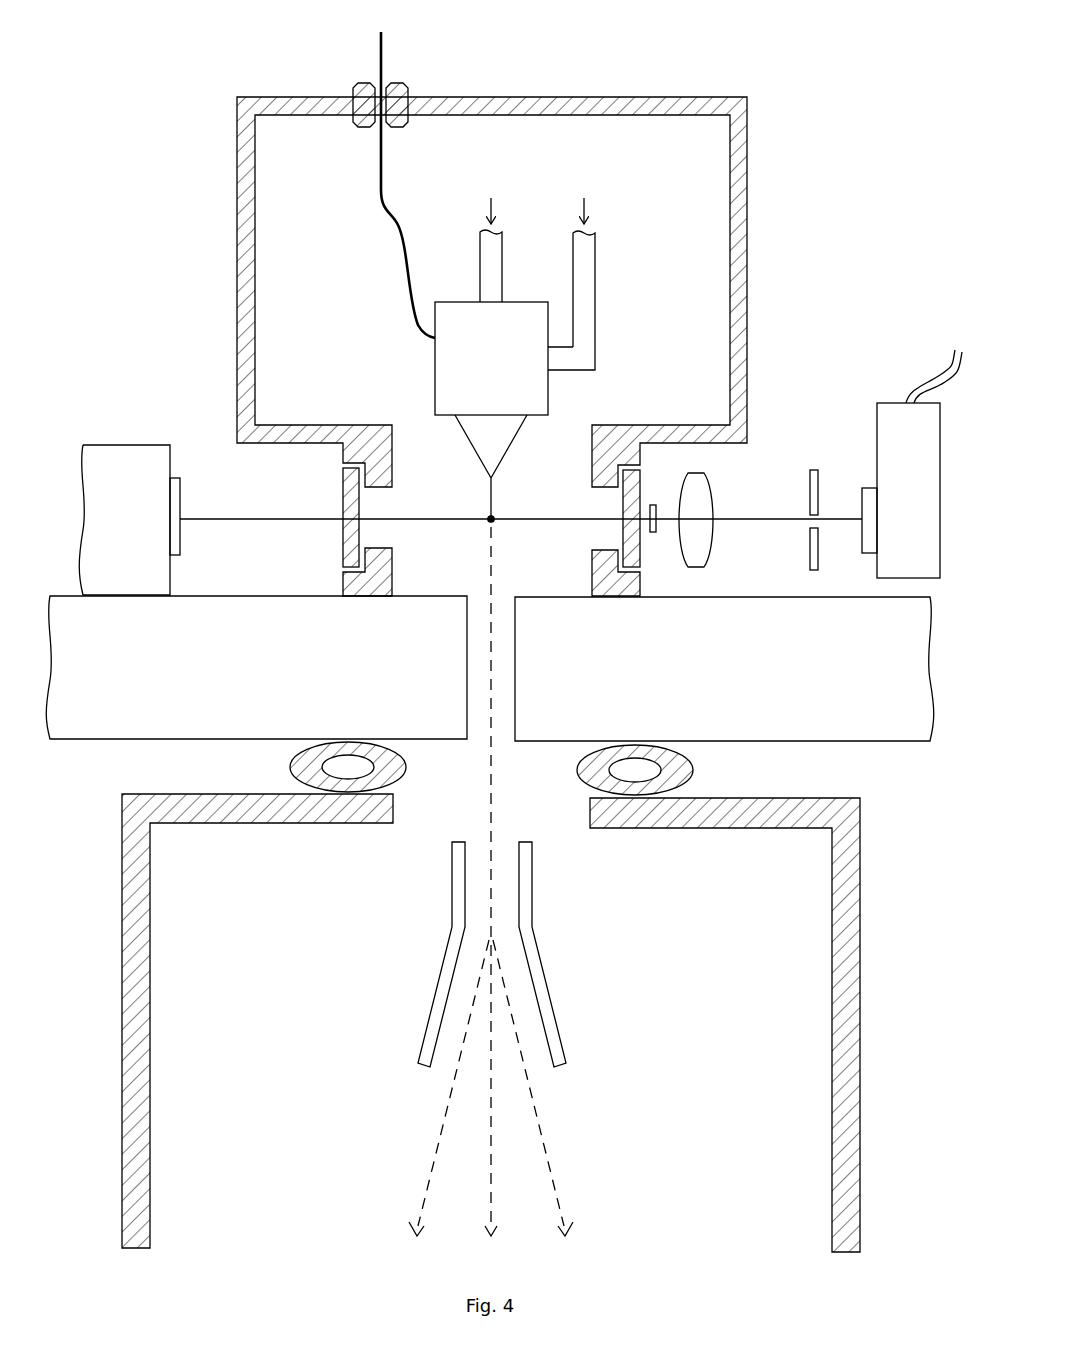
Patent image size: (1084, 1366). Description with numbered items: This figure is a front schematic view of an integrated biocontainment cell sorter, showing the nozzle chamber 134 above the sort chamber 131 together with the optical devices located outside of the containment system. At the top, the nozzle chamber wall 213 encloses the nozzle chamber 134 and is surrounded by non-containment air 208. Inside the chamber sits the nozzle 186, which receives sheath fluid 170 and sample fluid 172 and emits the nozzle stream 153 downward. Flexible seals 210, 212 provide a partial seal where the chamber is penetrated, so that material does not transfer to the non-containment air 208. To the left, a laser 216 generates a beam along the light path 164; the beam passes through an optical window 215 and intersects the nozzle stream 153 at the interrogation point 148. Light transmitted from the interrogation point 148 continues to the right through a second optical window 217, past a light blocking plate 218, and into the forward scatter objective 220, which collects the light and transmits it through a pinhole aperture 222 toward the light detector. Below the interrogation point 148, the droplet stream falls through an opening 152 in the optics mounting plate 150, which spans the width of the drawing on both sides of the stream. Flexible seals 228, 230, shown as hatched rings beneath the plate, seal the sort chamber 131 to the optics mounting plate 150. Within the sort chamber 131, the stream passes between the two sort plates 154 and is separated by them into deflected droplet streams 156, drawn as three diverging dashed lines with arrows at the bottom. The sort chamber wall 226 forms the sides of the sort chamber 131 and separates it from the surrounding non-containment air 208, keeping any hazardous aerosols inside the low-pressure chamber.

The sort chamber 131 is at (257, 1062).
The nozzle chamber 134 is at (306, 306).
The interrogation point 148 is at (494, 518).
The optics mounting plate 150 is at (862, 738).
The opening 152 is at (503, 713).
The nozzle stream 153 is at (489, 497).
The sort plates 154 is at (532, 937).
The deflected droplet streams 156 is at (437, 1148).
The light path 164 is at (293, 517).
The sheath fluid 170 is at (585, 200).
The sample fluid 172 is at (492, 197).
The nozzle 186 is at (476, 386).
The non-containment air 208 is at (124, 306).
The flexible seal 210 is at (383, 50).
The flexible seal 212 is at (400, 83).
The nozzle chamber wall 213 is at (748, 152).
The optical window 215 is at (343, 535).
The laser 216 is at (120, 445).
The optical window 217 is at (641, 490).
The light blocking plate 218 is at (653, 532).
The forward scatter objective 220 is at (712, 490).
The pinhole aperture 222 is at (836, 566).
The sort chamber wall 226 is at (832, 965).
The flexible seal 228 is at (693, 770).
The flexible seal 230 is at (290, 768).